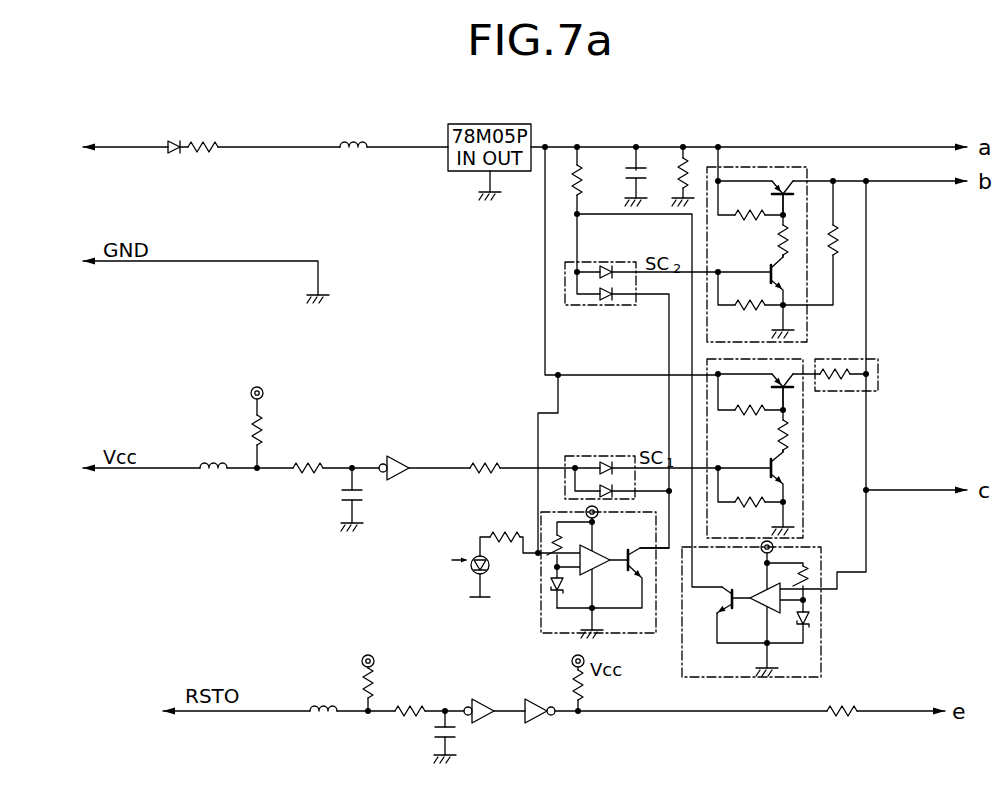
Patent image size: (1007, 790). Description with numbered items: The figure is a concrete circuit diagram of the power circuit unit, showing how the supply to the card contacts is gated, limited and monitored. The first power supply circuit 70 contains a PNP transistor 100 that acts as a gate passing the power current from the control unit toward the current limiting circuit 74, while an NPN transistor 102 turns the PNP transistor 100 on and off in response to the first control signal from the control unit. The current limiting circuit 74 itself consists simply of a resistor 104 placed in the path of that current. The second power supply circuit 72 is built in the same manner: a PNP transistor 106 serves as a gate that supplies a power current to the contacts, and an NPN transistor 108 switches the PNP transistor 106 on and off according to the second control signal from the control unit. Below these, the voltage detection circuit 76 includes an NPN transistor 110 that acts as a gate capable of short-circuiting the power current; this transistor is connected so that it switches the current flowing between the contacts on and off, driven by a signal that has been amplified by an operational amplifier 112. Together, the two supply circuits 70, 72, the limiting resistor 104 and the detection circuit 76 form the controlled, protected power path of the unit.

The first power supply circuit 70 is at (806, 435).
The second power supply circuit 72 is at (758, 167).
The current limiting circuit 74 is at (871, 390).
The voltage detection circuit 76 is at (791, 609).
The PNP transistor 100 is at (771, 384).
The NPN transistor 102 is at (766, 457).
The resistor 104 is at (834, 391).
The PNP transistor 106 is at (771, 190).
The NPN transistor 108 is at (764, 262).
The NPN transistor 110 is at (741, 609).
The operational amplifier 112 is at (756, 590).